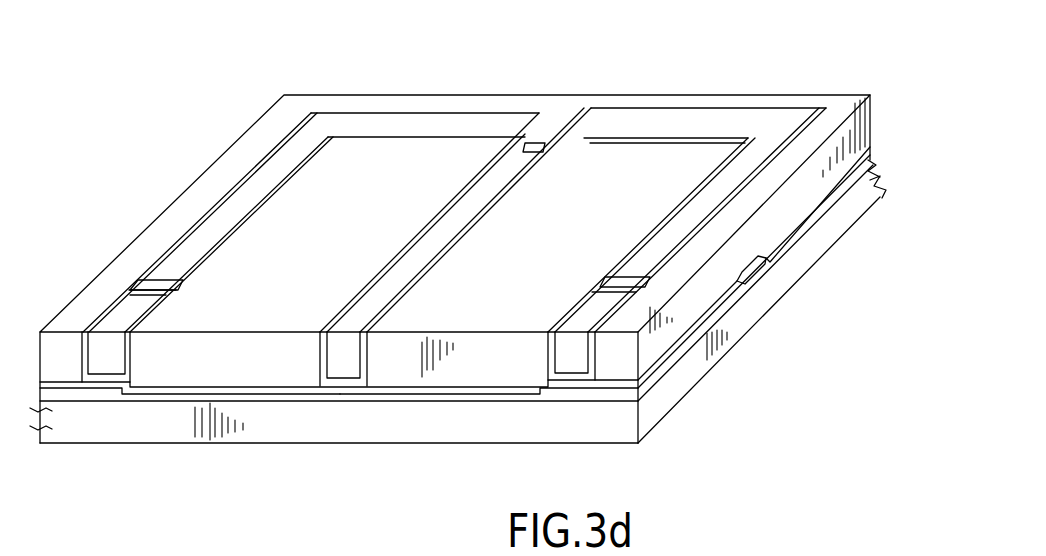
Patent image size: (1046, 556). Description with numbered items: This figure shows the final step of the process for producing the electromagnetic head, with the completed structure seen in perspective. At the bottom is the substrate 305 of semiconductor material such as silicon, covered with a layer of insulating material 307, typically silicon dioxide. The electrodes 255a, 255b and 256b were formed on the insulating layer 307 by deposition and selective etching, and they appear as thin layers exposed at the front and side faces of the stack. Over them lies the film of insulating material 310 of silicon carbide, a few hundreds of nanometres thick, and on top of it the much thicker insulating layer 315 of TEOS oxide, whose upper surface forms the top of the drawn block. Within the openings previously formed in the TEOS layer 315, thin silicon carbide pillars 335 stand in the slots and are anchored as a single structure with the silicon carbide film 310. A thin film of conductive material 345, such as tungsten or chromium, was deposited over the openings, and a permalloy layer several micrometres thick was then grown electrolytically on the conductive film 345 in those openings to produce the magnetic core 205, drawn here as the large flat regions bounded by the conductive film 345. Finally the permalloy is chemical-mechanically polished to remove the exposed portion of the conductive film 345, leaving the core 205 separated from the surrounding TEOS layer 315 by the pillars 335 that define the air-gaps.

The magnetic core 205 is at (723, 178).
The electrode 255a is at (99, 392).
The electrode 255b is at (597, 409).
The electrode 256b is at (760, 268).
The substrate 305 is at (697, 367).
The layer of insulating material 307 is at (257, 403).
The film of insulating material 310 is at (215, 388).
The insulating layer 315 is at (163, 237).
The silicon carbide pillars 335 is at (168, 280).
The film of conductive material 345 is at (425, 140).